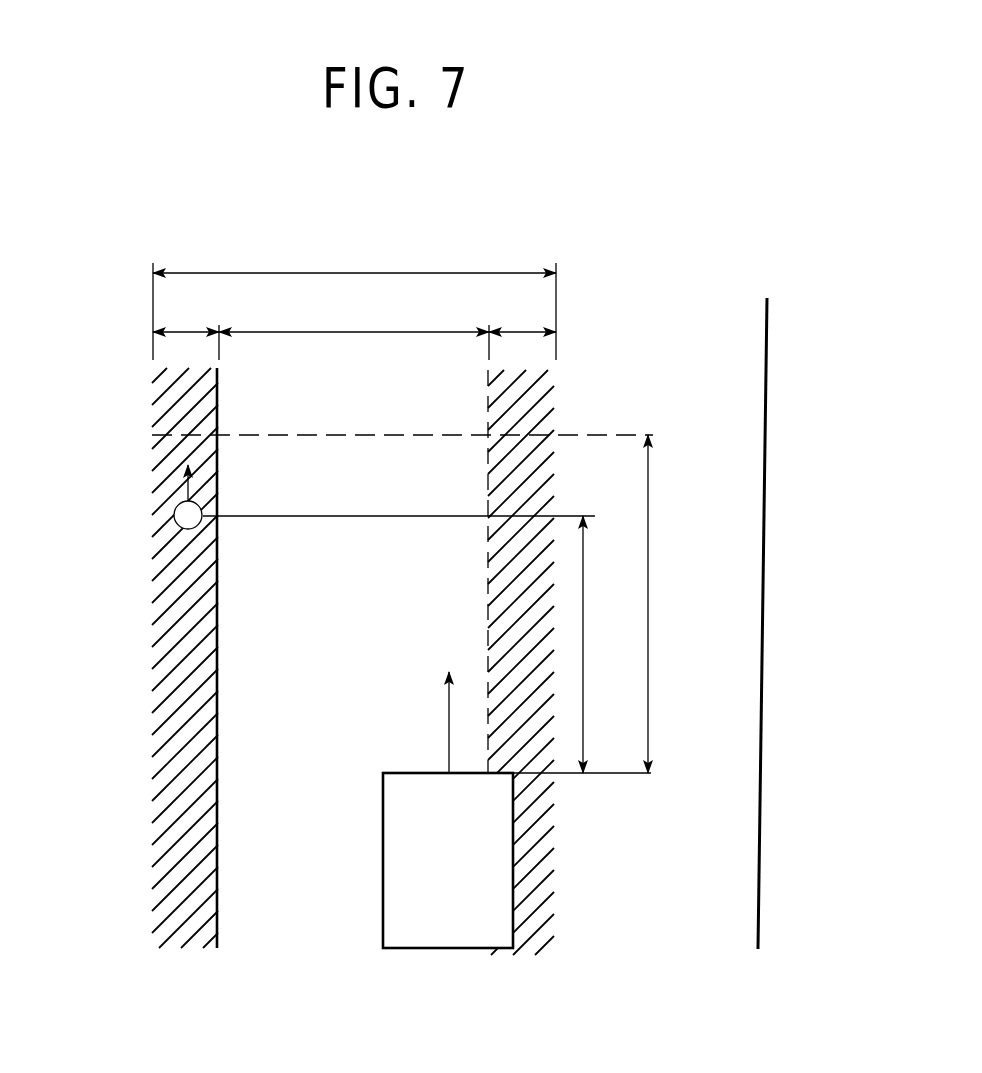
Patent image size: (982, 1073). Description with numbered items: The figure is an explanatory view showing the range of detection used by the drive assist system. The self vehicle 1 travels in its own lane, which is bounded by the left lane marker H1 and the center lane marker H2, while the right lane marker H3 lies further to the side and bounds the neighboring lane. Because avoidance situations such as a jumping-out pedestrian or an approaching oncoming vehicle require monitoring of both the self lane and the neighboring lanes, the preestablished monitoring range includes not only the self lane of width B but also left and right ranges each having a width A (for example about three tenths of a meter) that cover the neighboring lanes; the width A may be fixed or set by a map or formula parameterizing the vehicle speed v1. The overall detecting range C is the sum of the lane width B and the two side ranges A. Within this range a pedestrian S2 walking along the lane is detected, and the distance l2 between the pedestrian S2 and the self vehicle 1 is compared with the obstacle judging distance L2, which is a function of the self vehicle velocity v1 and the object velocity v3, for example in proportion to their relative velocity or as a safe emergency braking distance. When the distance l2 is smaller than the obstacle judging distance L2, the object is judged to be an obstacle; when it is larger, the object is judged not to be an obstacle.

The vehicle 1 is at (433, 948).
The lane marker H1 is at (216, 823).
The lane marker H2 is at (492, 396).
The lane marker H3 is at (761, 853).
The pedestrian S2 is at (176, 518).
The velocity of the self vehicle v1 is at (448, 703).
The velocity of the object v3 is at (186, 490).
The obstacle judging distance L2 is at (669, 604).
The distance between the object and the self vehicle l2 is at (599, 644).
The width of left and right detecting ranges A is at (354, 325).
The self lane width B is at (354, 311).
The overall detecting range C is at (354, 296).